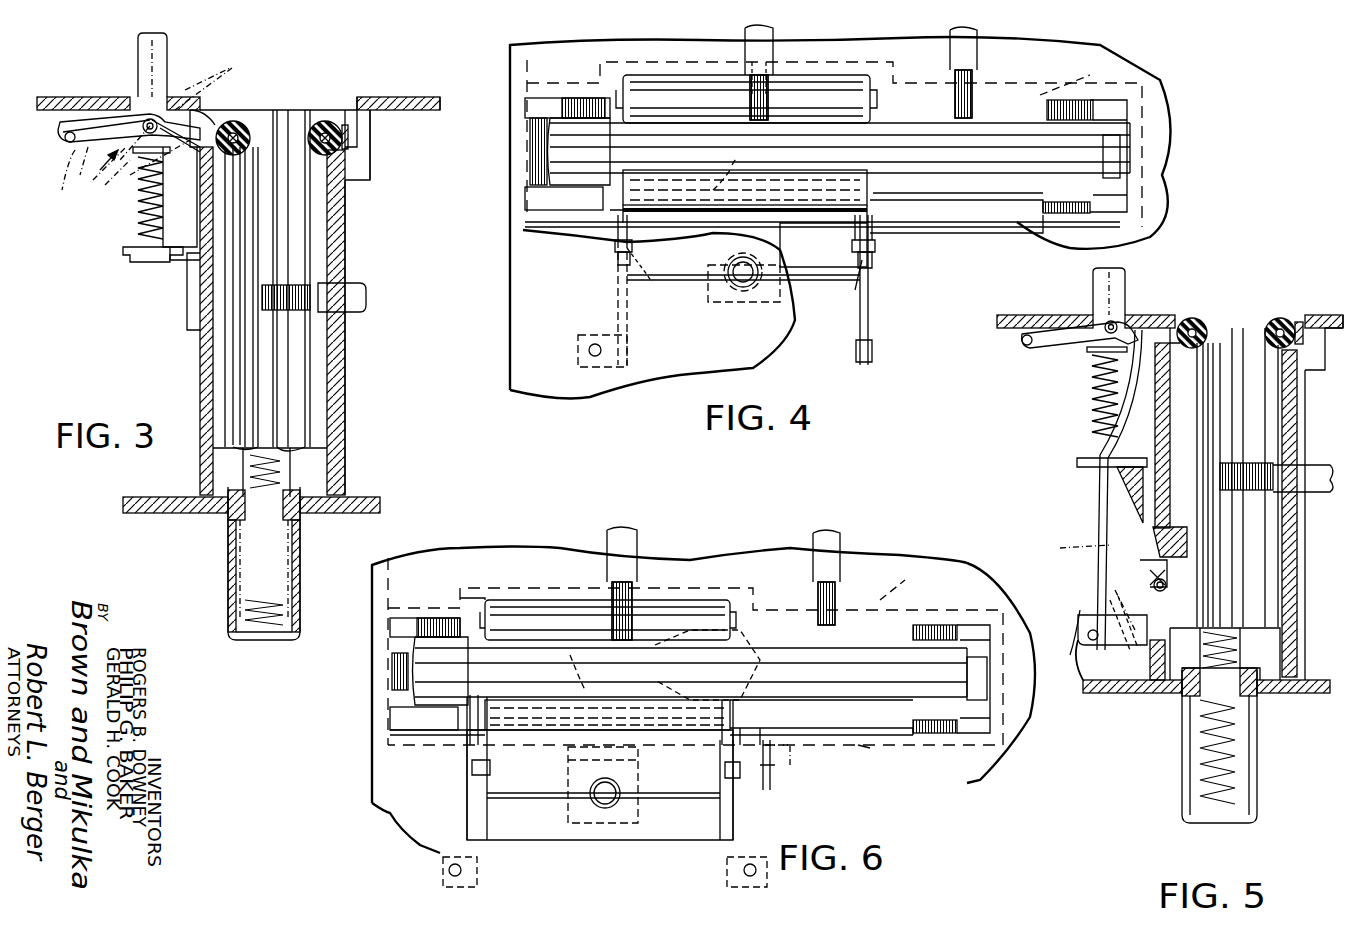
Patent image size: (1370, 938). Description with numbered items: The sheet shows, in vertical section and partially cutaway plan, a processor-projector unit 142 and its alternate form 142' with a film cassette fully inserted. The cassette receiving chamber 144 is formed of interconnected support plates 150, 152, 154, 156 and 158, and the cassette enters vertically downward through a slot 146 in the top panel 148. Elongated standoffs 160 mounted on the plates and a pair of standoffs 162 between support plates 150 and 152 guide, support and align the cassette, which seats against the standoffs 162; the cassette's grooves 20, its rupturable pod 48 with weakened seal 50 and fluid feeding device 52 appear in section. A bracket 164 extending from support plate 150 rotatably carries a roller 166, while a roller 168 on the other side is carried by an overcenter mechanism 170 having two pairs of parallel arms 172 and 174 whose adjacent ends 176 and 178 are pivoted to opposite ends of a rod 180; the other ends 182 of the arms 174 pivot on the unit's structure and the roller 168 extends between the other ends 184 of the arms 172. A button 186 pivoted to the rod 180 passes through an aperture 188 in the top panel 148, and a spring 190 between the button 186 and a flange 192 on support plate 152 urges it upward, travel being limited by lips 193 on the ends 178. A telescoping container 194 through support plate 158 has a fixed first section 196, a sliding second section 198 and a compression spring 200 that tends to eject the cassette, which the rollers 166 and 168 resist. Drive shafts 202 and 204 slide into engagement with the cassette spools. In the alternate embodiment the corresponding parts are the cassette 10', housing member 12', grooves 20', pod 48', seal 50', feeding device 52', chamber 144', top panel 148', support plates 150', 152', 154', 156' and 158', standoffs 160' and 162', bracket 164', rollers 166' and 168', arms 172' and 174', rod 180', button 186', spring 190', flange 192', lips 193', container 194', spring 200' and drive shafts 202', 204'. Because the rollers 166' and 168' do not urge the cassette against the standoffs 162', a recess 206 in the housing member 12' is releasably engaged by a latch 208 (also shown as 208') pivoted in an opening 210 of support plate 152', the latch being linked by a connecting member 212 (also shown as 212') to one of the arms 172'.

In FIG. 5, the cassette 10' is at (1307, 535).
In FIG. 5, the housing member 12' is at (1084, 392).
In FIG. 6, the housing member 12' is at (837, 755).
In FIG. 3, the elongated parallel grooves 20 is at (209, 298).
In FIG. 5, the elongated parallel grooves 20' is at (1126, 485).
In FIG. 3, the rupturable pod 48 is at (202, 297).
In FIG. 5, the rupturable pod 48' is at (1276, 485).
In FIG. 3, the weakened seal 50 is at (237, 280).
In FIG. 5, the weakened seal 50' is at (1294, 477).
In FIG. 3, the fluid feeding device 52 is at (228, 278).
In FIG. 4, the fluid feeding device 52 is at (707, 179).
In FIG. 5, the fluid feeding device 52' is at (1287, 477).
In FIG. 6, the fluid feeding device 52' is at (649, 665).
In FIG. 3, the processor-projector unit 142 is at (427, 62).
In FIG. 4, the processor-projector unit 142 is at (840, 242).
In FIG. 5, the processor-projector unit 142' is at (1332, 277).
In FIG. 6, the processor-projector unit 142' is at (677, 706).
In FIG. 3, the cassette receiving chamber 144 is at (273, 239).
In FIG. 5, the cassette receiving chamber 144' is at (1256, 312).
In FIG. 6, the cassette receiving chamber 144' is at (442, 600).
In FIG. 3, the slot 146 is at (348, 97).
In FIG. 3, the top panel 148 is at (83, 75).
In FIG. 5, the top panel 148' is at (1170, 306).
In FIG. 3, the support plate 150 is at (370, 302).
In FIG. 4, the support plate 150 is at (1075, 64).
In FIG. 5, the support plate 150' is at (1314, 497).
In FIG. 6, the support plate 150' is at (902, 590).
In FIG. 3, the support plate 152 is at (166, 321).
In FIG. 4, the support plate 152 is at (956, 237).
In FIG. 5, the support plate 152' is at (1105, 511).
In FIG. 6, the support plate 152' is at (861, 773).
In FIG. 4, the support plate 154 is at (791, 230).
In FIG. 6, the support plate 154' is at (404, 719).
In FIG. 4, the support plate 156 is at (1162, 156).
In FIG. 5, the support plate 156' is at (1057, 676).
In FIG. 6, the support plate 156' is at (1019, 679).
In FIG. 3, the support plate 158 is at (251, 514).
In FIG. 5, the support plate 158' is at (1206, 700).
In FIG. 3, the elongated standoffs 160 is at (259, 302).
In FIG. 4, the elongated standoffs 160 is at (840, 147).
In FIG. 5, the elongated standoffs 160 is at (1054, 626).
In FIG. 5, the elongated standoffs 160' is at (1205, 513).
In FIG. 6, the elongated standoffs 160' is at (653, 656).
In FIG. 3, the standoffs 162 is at (302, 452).
In FIG. 4, the standoffs 162 is at (838, 104).
In FIG. 5, the standoffs 162' is at (1258, 637).
In FIG. 6, the standoffs 162' is at (690, 694).
In FIG. 3, the bracket 164 is at (336, 98).
In FIG. 6, the bracket 164' is at (739, 563).
In FIG. 3, the roller 166 is at (268, 107).
In FIG. 4, the roller 166 is at (775, 82).
In FIG. 5, the roller 166' is at (1288, 306).
In FIG. 6, the roller 166' is at (608, 593).
In FIG. 3, the roller 168 is at (232, 84).
In FIG. 4, the roller 168 is at (745, 218).
In FIG. 3, the roller 168' is at (144, 174).
In FIG. 5, the roller 168' is at (1199, 310).
In FIG. 6, the roller 168' is at (576, 706).
In FIG. 3, the overcenter mechanism 170 is at (99, 187).
In FIG. 3, the arms 172 is at (196, 98).
In FIG. 4, the arms 172 is at (848, 243).
In FIG. 3, the arms 172' is at (222, 67).
In FIG. 6, the arms 172' is at (620, 743).
In FIG. 3, the arms 174 is at (106, 88).
In FIG. 4, the arms 174 is at (748, 290).
In FIG. 3, the arms 174' is at (59, 186).
In FIG. 6, the arms 174' is at (608, 792).
In FIG. 4, the adjacent ends 176 is at (615, 278).
In FIG. 4, the adjacent ends 178 is at (862, 270).
In FIG. 3, the rod 180 is at (136, 101).
In FIG. 4, the rod 180 is at (743, 304).
In FIG. 5, the rod 180' is at (1066, 342).
In FIG. 6, the rod 180' is at (600, 785).
In FIG. 3, the other ends 182 is at (53, 177).
In FIG. 4, the other ends 182 is at (632, 352).
In FIG. 4, the other ends 184 is at (620, 220).
In FIG. 3, the button 186 is at (177, 64).
In FIG. 4, the button 186 is at (750, 294).
In FIG. 5, the button 186' is at (1137, 289).
In FIG. 6, the button 186' is at (645, 780).
In FIG. 3, the aperture 188 is at (146, 120).
In FIG. 3, the spring 190 is at (131, 204).
In FIG. 5, the spring 190' is at (1067, 403).
In FIG. 3, the flange 192 is at (170, 225).
In FIG. 4, the flange 192 is at (731, 296).
In FIG. 5, the flange 192' is at (1082, 460).
In FIG. 6, the flange 192' is at (575, 785).
In FIG. 4, the lips 193 is at (778, 255).
In FIG. 6, the lips 193' is at (606, 787).
In FIG. 3, the telescoping container 194 is at (225, 563).
In FIG. 4, the telescoping container 194 is at (840, 154).
In FIG. 5, the telescoping container 194' is at (1257, 746).
In FIG. 6, the telescoping container 194' is at (691, 658).
In FIG. 3, the first section 196 is at (300, 592).
In FIG. 3, the second section 198 is at (290, 553).
In FIG. 3, the compression spring 200 is at (246, 645).
In FIG. 5, the compression spring 200' is at (1261, 752).
In FIG. 3, the drive shaft 202 is at (341, 283).
In FIG. 4, the drive shaft 202 is at (790, 72).
In FIG. 5, the drive shaft 202' is at (1288, 492).
In FIG. 6, the drive shaft 202' is at (648, 575).
In FIG. 4, the drive shaft 204 is at (995, 71).
In FIG. 6, the drive shaft 204' is at (863, 567).
In FIG. 5, the recess 206 is at (1262, 600).
In FIG. 6, the recess 206 is at (770, 700).
In FIG. 5, the latch 208 is at (1111, 567).
In FIG. 6, the latch 208 is at (803, 765).
In FIG. 5, the latch 208' is at (1061, 550).
In FIG. 5, the opening 210 is at (1115, 505).
In FIG. 5, the connecting member 212 is at (1098, 605).
In FIG. 5, the connecting member 212' is at (1095, 615).